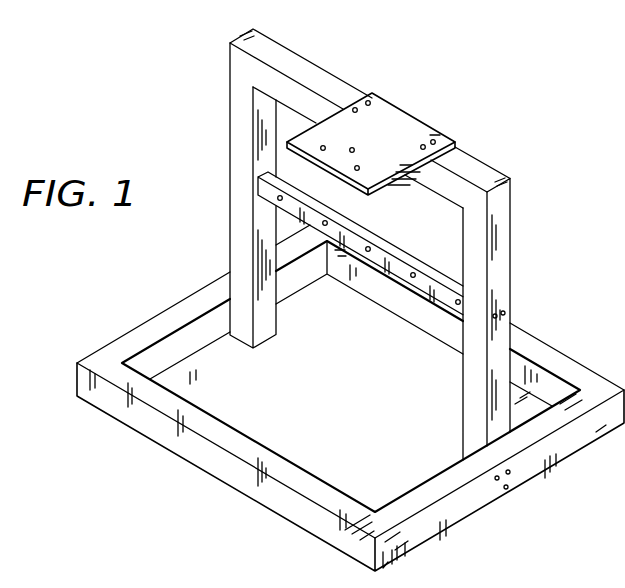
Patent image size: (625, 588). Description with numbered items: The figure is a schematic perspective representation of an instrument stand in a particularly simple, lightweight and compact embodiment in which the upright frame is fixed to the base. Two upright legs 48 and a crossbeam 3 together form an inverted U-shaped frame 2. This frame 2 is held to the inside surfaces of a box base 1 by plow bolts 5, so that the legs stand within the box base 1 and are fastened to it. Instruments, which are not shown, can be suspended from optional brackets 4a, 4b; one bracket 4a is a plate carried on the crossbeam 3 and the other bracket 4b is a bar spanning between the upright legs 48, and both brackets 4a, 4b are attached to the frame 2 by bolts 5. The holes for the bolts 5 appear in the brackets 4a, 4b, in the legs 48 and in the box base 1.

The box base 1 is at (578, 448).
The frame 2 is at (370, 243).
The crossbeam 3 is at (312, 100).
The bracket 4a is at (389, 167).
The bracket 4b is at (403, 254).
The plow bolts 5 is at (425, 104).
The upright legs 48 is at (230, 217).